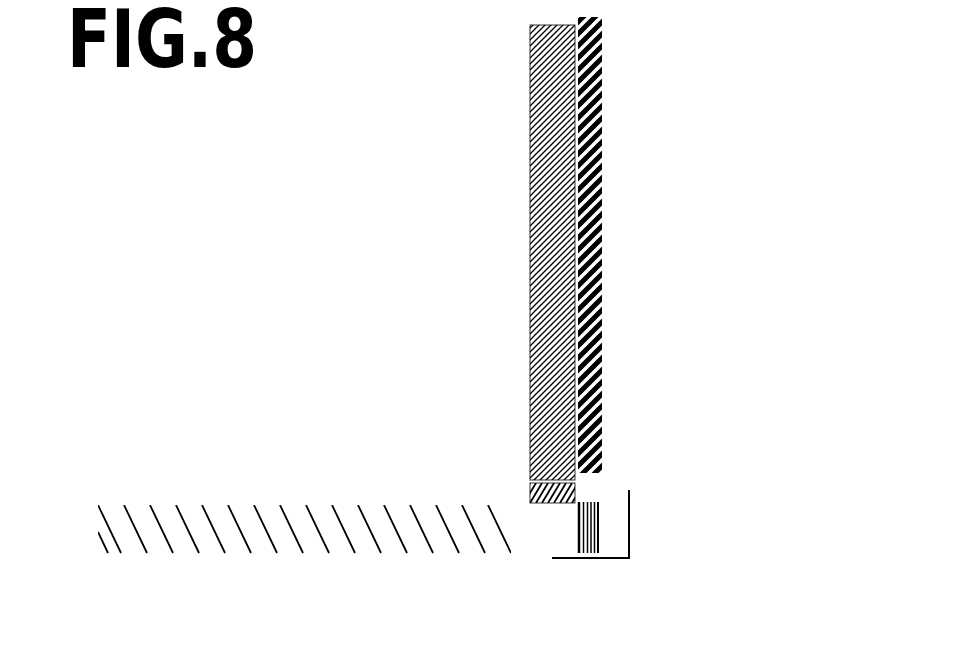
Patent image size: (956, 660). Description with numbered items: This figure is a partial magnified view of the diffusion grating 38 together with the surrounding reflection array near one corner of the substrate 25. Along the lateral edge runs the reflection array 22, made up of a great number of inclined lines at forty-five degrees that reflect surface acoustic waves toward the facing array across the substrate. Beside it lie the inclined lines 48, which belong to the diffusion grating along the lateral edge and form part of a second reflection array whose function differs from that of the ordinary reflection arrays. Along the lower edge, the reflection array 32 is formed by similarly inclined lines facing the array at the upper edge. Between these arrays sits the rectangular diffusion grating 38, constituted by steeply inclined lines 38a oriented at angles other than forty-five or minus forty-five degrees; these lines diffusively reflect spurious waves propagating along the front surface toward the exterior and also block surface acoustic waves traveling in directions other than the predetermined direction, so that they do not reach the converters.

The reflection array 22 is at (518, 231).
The inclined lines 48 is at (615, 246).
The reflection array 32 is at (278, 482).
The diffusion grating 38 is at (545, 514).
The inclined lines 38a is at (577, 492).
The corner of the substrate 25 is at (631, 522).